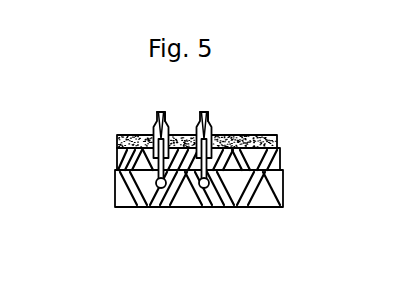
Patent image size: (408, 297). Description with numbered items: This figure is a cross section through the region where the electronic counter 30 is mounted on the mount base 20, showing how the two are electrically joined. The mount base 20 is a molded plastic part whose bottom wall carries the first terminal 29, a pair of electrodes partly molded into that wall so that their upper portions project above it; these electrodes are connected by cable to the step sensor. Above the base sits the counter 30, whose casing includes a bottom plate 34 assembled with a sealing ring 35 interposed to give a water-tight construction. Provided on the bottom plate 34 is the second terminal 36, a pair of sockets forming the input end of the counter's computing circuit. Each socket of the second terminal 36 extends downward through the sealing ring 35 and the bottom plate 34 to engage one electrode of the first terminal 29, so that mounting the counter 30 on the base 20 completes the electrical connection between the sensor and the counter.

The mount base 20 is at (123, 207).
The first terminal 29 is at (229, 133).
The electronic counter 30 is at (162, 129).
The bottom plate 34 is at (117, 148).
The sealing ring 35 is at (118, 138).
The second terminal 36 is at (208, 120).